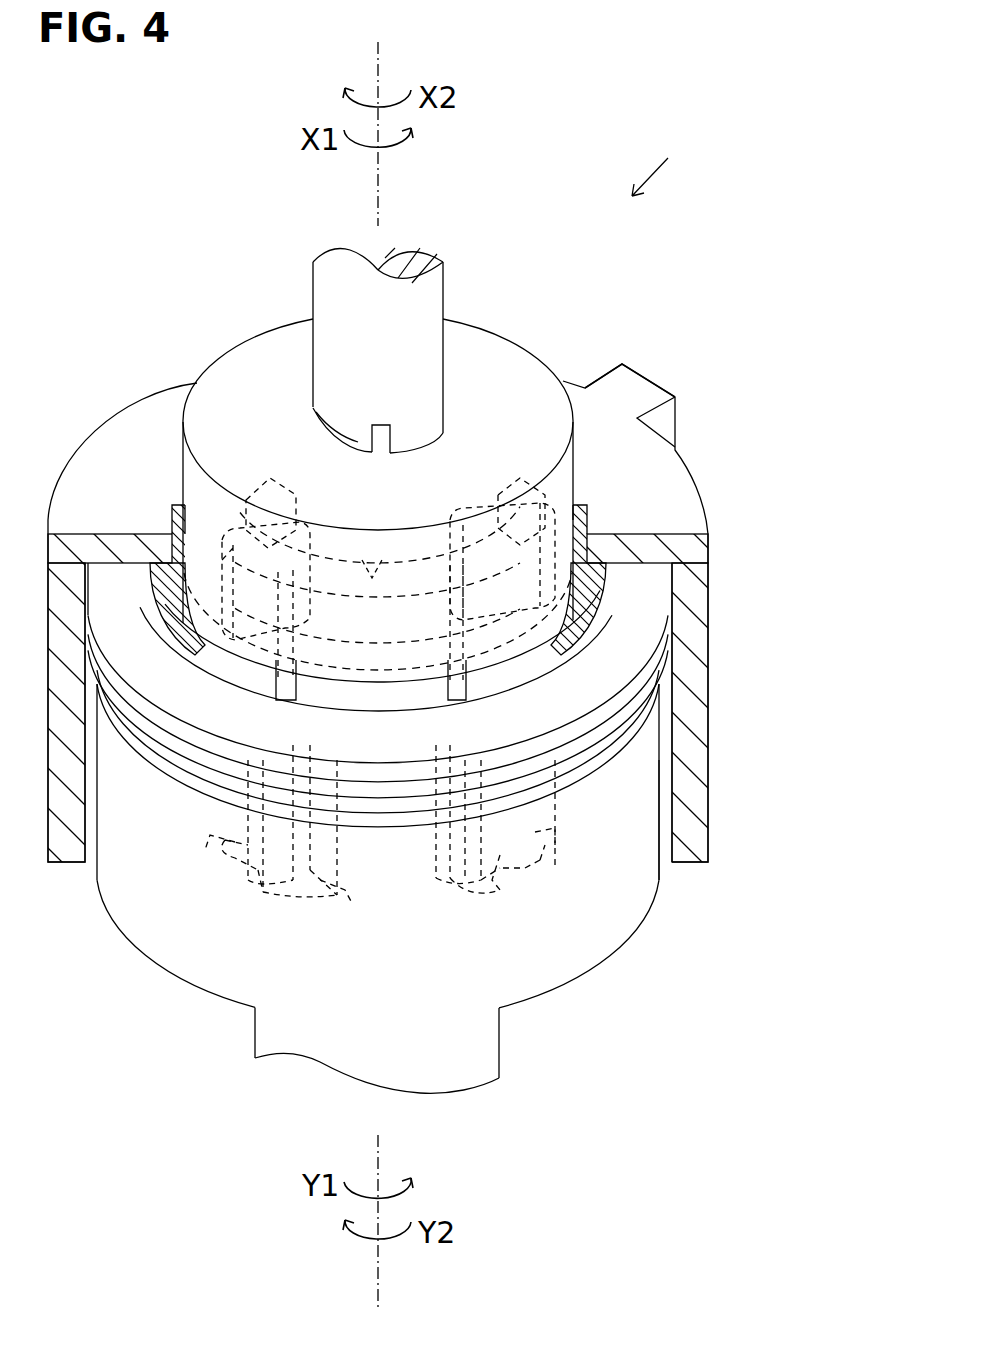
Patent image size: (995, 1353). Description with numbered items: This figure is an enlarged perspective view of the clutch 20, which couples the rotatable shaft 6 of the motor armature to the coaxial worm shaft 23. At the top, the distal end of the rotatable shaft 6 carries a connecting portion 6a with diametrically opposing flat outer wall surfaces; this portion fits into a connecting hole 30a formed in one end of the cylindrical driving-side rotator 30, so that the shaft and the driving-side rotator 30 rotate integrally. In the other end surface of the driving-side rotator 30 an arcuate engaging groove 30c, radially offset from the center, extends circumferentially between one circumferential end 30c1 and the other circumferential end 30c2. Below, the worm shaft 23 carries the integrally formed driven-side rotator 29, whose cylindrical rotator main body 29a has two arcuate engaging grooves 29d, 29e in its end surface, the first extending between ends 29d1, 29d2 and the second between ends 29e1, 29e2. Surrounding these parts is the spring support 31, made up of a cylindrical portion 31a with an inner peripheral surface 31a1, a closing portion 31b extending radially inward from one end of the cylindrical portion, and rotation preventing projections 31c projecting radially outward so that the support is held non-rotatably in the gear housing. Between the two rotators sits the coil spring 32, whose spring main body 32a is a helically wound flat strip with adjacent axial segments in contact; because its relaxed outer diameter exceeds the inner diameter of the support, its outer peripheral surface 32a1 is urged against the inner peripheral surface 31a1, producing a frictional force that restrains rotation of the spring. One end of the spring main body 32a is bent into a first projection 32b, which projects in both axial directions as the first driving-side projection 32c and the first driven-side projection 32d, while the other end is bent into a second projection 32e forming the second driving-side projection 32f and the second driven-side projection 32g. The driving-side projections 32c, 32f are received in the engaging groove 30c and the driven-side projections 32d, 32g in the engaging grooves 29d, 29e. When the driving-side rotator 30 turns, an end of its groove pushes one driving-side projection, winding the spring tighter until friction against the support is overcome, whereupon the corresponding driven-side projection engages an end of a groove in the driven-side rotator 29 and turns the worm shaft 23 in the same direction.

The rotatable shaft 6 is at (342, 256).
The connecting portion 6a is at (382, 452).
The clutch 20 is at (659, 159).
The worm shaft 23 is at (499, 1050).
The driven-side rotator 29 is at (190, 978).
The rotator main body 29a is at (596, 956).
The engaging groove 29d is at (242, 882).
The one circumferential end of engaging groove 29d1 is at (342, 918).
The other circumferential end of engaging groove 29d2 is at (205, 848).
The engaging groove 29e is at (548, 875).
The one circumferential end of engaging groove 29e1 is at (445, 905).
The other circumferential end of engaging groove 29e2 is at (562, 834).
The driving-side rotator 30 is at (498, 332).
The connecting hole 30a is at (355, 438).
The engaging groove 30c is at (376, 566).
The one circumferential end of engaging groove 30c1 is at (262, 492).
The other circumferential end of engaging groove 30c2 is at (512, 490).
The spring support 31 is at (700, 470).
The cylindrical portion 31a is at (692, 778).
The inner peripheral surface 31a1 is at (672, 584).
The closing portion 31b is at (116, 420).
The rotation preventing projection 31c is at (648, 386).
The coil spring 32 is at (626, 600).
The spring main body 32a is at (660, 630).
The outer peripheral surface 32a1 is at (655, 685).
The first projection 32b is at (298, 522).
The first driving-side projection 32c is at (306, 620).
The first driven-side projection 32d is at (330, 900).
The second projection 32e is at (450, 522).
The second driving-side projection 32f is at (452, 608).
The second driven-side projection 32g is at (500, 908).